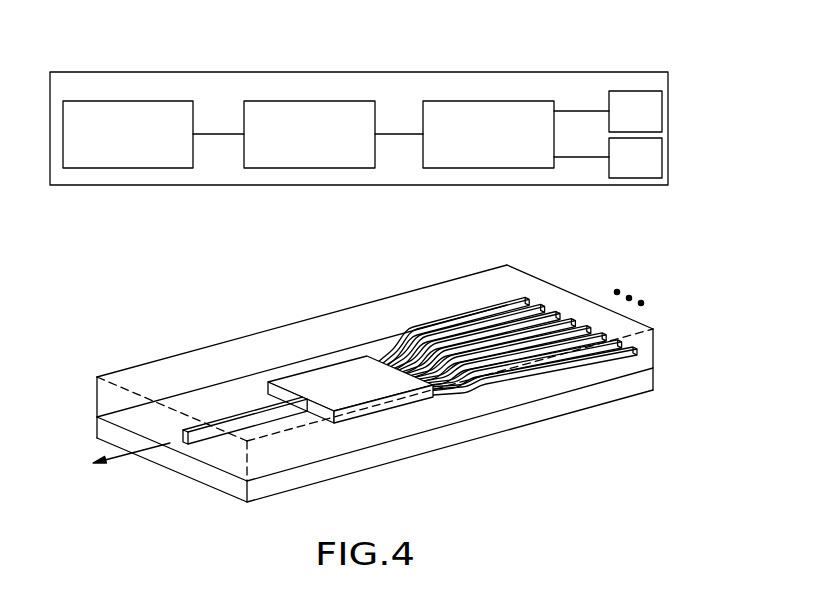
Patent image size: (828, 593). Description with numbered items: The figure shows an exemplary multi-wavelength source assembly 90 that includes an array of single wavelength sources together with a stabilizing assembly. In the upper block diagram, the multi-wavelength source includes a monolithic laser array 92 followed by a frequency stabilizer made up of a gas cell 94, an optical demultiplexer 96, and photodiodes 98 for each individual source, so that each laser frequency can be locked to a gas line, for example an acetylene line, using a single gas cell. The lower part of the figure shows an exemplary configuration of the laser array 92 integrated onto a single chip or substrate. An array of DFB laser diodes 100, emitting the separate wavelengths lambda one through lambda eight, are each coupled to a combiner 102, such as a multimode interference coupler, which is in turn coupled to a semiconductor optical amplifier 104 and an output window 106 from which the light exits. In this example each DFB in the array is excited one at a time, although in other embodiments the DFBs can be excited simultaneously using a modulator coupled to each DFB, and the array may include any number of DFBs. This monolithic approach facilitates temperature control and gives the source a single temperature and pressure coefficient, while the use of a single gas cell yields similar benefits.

The multi-wavelength source assembly 90 is at (267, 50).
The monolithic laser array 92 is at (68, 116).
The gas cell 94 is at (319, 108).
The optical demultiplexer 96 is at (528, 162).
The photodiodes 98 is at (668, 94).
The DFB laser diodes 100 is at (573, 367).
The combiner 102 is at (376, 393).
The semiconductor optical amplifier 104 is at (231, 466).
The output window 106 is at (184, 447).